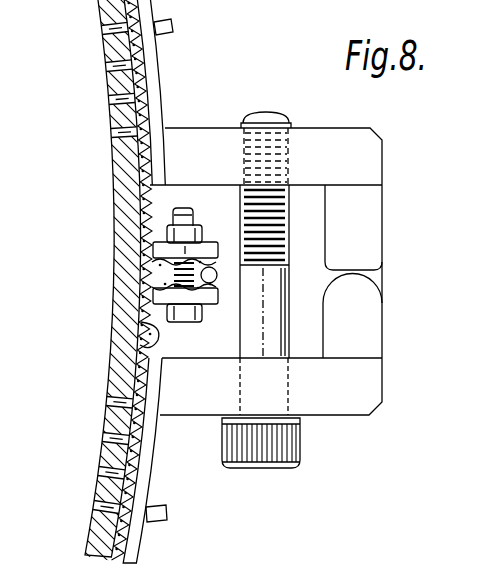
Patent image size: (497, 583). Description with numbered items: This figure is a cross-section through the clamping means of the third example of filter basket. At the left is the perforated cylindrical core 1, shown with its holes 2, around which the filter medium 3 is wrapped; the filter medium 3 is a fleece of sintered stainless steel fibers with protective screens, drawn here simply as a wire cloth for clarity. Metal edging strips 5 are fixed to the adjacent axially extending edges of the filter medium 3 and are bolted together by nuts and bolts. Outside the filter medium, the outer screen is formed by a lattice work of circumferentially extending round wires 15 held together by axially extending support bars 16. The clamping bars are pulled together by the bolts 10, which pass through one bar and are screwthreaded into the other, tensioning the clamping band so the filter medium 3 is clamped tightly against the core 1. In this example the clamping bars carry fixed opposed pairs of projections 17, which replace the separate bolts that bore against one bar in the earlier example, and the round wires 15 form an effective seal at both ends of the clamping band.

The perforated cylindrical core 1 is at (120, 210).
The holes 2 is at (105, 100).
The filter medium 3 is at (140, 330).
The metal edging strips 5 is at (160, 295).
The bolts 10 is at (270, 445).
The circumferentially extending round wires 15 is at (152, 105).
The axially extending support bars 16 is at (172, 27).
The fixed opposed pairs of projections 17 is at (368, 303).